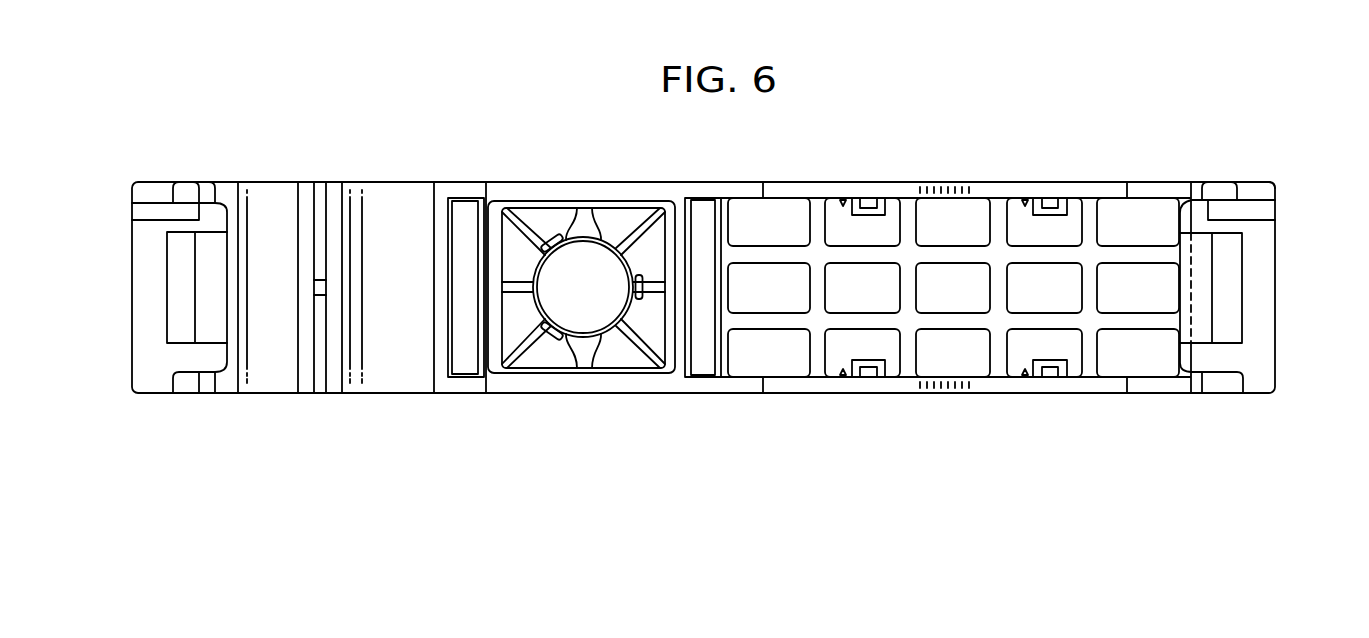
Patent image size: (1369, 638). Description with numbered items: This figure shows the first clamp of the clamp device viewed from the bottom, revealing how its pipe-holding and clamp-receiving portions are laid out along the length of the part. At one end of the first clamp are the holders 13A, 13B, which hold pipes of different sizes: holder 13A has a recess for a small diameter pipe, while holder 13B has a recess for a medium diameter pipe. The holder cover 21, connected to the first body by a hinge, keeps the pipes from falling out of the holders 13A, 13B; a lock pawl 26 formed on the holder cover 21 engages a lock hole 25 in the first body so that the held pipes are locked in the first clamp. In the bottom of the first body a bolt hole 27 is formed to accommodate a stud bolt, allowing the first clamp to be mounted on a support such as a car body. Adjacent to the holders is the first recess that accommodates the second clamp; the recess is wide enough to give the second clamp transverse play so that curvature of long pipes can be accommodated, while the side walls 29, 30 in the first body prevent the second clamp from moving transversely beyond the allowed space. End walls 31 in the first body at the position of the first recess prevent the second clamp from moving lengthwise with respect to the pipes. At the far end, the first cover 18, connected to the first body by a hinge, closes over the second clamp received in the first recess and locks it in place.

The holder 13A is at (270, 198).
The holder 13B is at (400, 198).
The first cover 18 is at (1258, 296).
The holder cover 21 is at (140, 343).
The lock hole 25 is at (478, 313).
The lock pawl 26 is at (178, 282).
The bolt hole 27 is at (585, 315).
The side wall 29 is at (725, 292).
The side wall 30 is at (1170, 327).
The end wall 31 is at (1053, 193).